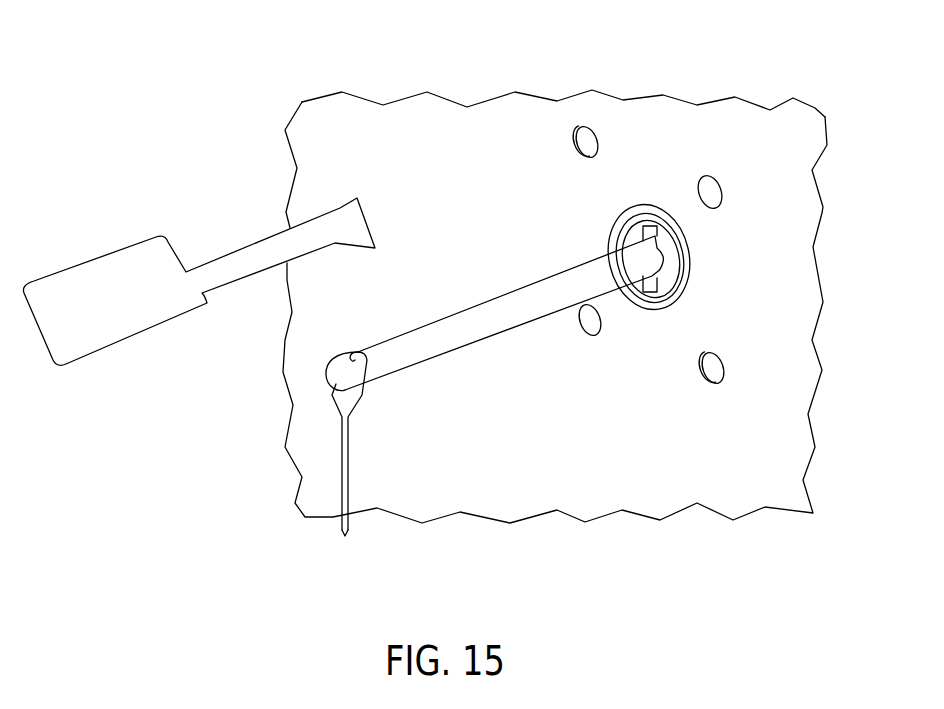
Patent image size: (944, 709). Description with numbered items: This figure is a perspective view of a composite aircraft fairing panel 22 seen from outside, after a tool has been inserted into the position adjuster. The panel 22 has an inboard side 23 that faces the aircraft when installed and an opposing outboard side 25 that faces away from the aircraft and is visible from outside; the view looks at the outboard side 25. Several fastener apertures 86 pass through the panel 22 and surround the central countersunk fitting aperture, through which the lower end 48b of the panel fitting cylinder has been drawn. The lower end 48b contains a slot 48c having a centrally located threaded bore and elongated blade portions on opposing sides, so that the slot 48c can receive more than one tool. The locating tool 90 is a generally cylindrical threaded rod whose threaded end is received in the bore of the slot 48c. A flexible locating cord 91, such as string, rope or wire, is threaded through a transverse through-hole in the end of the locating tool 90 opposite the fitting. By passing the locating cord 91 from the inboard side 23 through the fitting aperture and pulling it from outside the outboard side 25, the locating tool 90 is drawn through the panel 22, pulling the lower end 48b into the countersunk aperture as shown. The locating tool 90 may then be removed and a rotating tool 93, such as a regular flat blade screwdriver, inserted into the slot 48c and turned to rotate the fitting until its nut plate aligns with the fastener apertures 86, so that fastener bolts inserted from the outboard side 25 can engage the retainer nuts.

The panel 22 is at (788, 198).
The inboard side 23 is at (817, 105).
The outboard side 25 is at (595, 447).
The fastener apertures 86 is at (707, 187).
The lower end 48b is at (633, 238).
The slot 48c is at (665, 276).
The locating tool 90 is at (463, 327).
The locating cord 91 is at (347, 447).
The rotating tool 93 is at (92, 258).